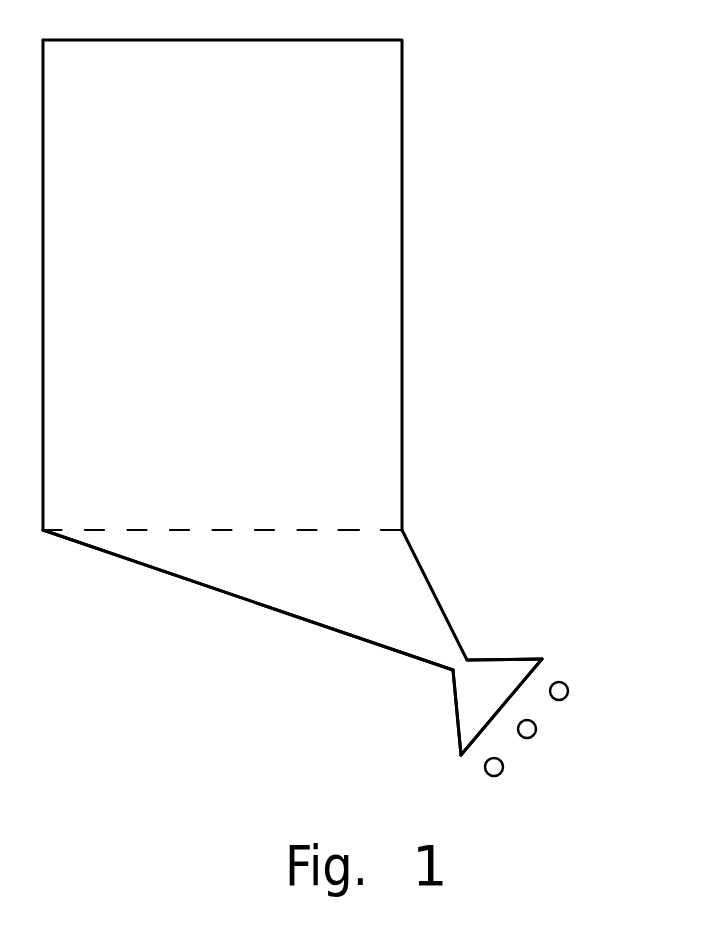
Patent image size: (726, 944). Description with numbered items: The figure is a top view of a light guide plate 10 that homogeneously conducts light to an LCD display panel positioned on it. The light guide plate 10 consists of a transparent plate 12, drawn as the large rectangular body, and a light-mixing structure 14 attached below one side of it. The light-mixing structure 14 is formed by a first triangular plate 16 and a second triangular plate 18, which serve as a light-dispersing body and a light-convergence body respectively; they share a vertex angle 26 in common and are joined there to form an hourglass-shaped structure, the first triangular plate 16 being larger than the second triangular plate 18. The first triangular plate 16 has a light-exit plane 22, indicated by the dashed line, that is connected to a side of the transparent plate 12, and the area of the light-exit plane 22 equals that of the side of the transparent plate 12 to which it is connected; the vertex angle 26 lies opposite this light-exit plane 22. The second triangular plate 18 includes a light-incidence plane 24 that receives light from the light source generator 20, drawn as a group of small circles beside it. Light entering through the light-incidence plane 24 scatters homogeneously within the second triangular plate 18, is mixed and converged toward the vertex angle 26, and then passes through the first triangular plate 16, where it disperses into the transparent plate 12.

The light guide plate 10 is at (541, 61).
The transparent plate 12 is at (230, 297).
The light-mixing structure 14 is at (552, 530).
The first triangular plate 16 is at (223, 570).
The second triangular plate 18 is at (455, 715).
The light source generator 20 is at (568, 693).
The light-exit plane 22 is at (340, 527).
The light-incidence plane 24 is at (507, 700).
The vertex angle 26 is at (465, 660).